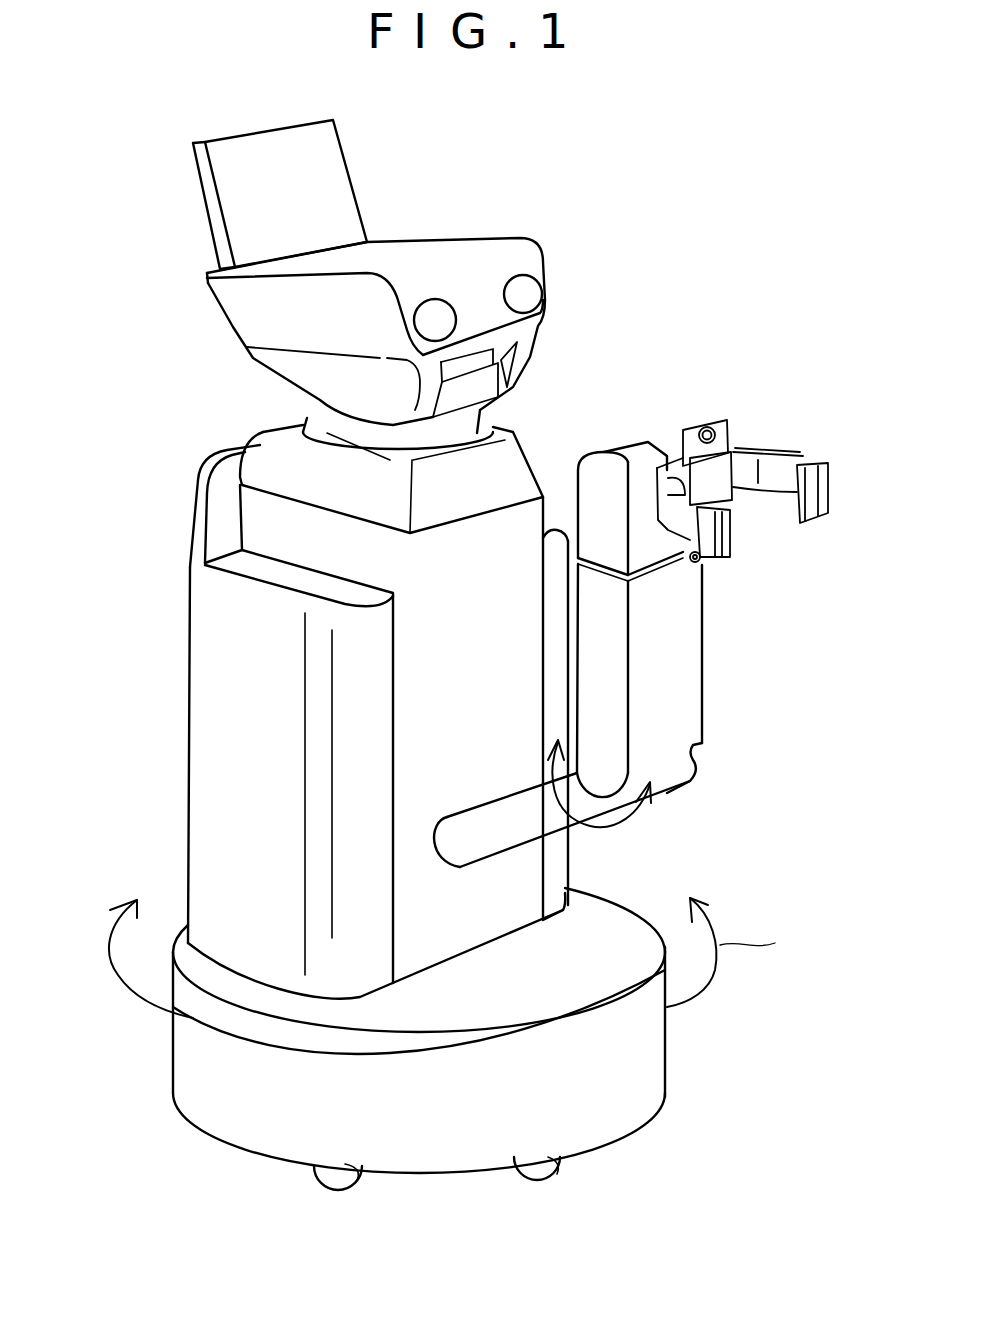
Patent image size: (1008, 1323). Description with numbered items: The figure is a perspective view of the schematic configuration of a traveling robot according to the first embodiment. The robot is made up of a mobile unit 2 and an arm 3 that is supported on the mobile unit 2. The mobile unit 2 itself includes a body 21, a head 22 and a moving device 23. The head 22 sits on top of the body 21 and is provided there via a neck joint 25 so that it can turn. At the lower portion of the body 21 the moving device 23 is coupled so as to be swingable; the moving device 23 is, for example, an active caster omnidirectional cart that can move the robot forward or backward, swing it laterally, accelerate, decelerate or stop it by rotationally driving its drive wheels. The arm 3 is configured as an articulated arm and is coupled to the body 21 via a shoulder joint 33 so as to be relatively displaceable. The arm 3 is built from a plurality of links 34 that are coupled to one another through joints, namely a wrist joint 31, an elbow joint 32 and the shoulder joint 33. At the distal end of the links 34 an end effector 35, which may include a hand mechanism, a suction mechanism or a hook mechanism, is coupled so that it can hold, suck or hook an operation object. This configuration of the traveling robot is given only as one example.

The mobile unit 2 is at (190, 621).
The body 21 is at (208, 703).
The head 22 is at (240, 318).
The moving device 23 is at (653, 1057).
The neck joint 25 is at (300, 415).
The arm 3 is at (680, 657).
The wrist joint 31 is at (647, 447).
The elbow joint 32 is at (668, 772).
The shoulder joint 33 is at (453, 843).
The links 34 is at (687, 602).
The end effector 35 is at (788, 465).